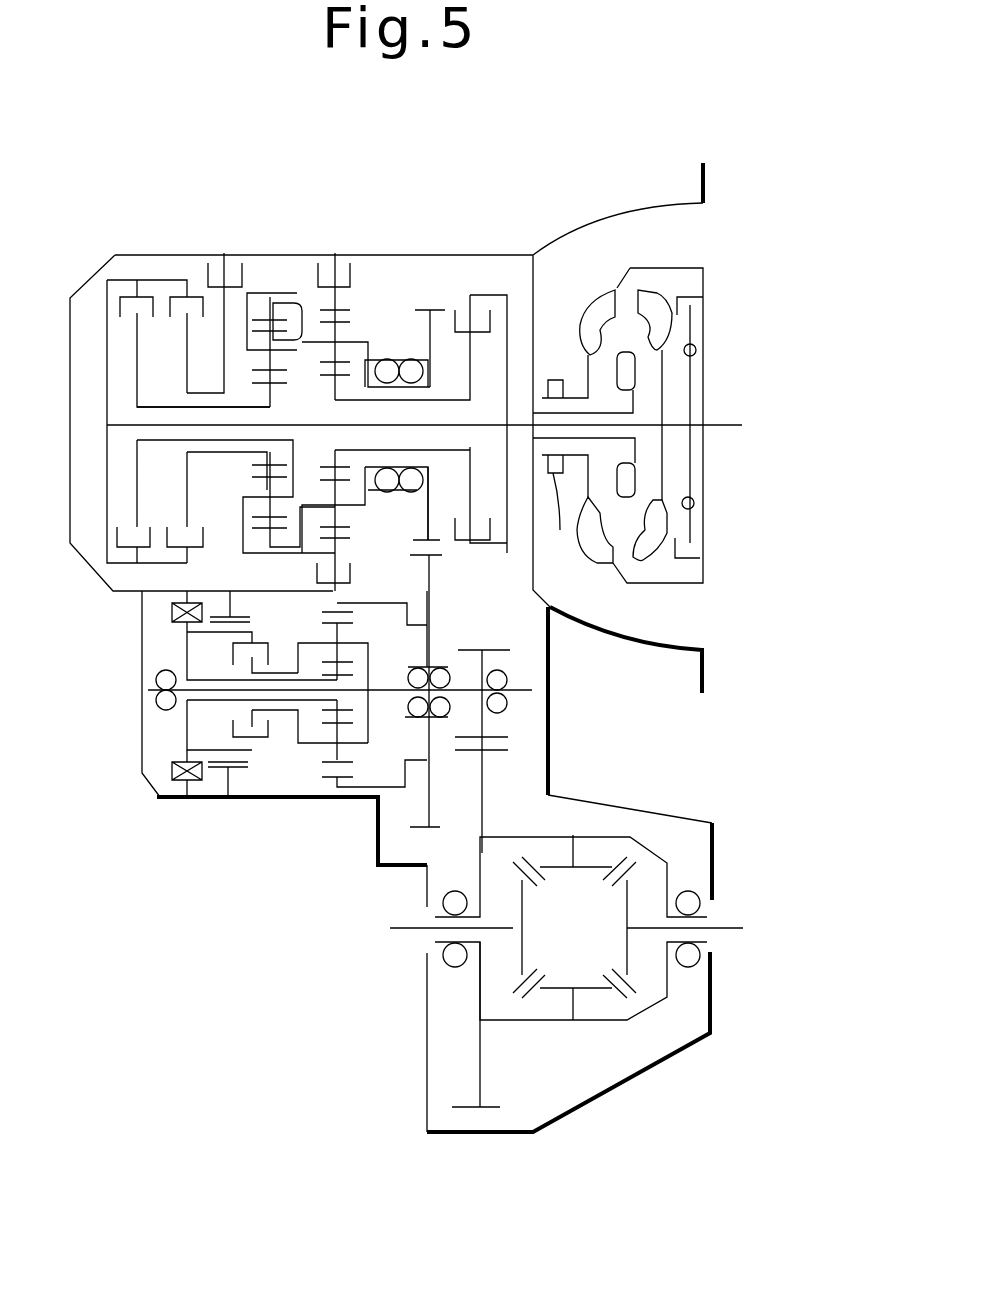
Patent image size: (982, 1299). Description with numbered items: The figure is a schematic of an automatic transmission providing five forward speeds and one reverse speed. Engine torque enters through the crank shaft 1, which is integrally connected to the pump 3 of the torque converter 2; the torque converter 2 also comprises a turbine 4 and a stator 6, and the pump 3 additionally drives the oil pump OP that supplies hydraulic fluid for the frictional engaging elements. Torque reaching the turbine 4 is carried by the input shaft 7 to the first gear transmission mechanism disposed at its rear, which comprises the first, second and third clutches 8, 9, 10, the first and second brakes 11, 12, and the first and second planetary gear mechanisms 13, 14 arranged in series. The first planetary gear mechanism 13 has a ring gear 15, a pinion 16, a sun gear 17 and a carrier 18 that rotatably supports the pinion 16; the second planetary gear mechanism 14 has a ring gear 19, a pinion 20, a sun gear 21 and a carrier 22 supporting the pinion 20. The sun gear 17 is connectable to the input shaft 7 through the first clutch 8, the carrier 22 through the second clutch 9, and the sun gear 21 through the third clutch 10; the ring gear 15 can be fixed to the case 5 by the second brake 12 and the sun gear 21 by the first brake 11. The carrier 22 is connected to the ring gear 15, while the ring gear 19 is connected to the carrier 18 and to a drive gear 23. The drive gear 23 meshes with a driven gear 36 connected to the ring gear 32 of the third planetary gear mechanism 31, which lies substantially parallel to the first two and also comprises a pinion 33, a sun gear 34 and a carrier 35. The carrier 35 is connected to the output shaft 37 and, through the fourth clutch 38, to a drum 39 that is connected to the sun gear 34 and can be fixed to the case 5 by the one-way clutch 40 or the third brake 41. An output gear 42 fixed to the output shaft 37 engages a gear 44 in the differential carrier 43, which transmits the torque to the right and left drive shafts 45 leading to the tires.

The crank shaft 1 is at (727, 425).
The torque converter 2 is at (688, 249).
The pump 3 is at (597, 317).
The turbine 4 is at (648, 310).
The case 5 is at (453, 253).
The stator 6 is at (627, 378).
The input shaft 7 is at (493, 422).
The first clutch 8 is at (460, 307).
The second clutch 9 is at (133, 297).
The third clutch 10 is at (180, 293).
The first brake 11 is at (223, 277).
The second brake 12 is at (327, 260).
The first planetary gear mechanism 13 is at (390, 296).
The second planetary gear mechanism 14 is at (236, 535).
The ring gear 15 is at (350, 312).
The pinion 16 is at (367, 320).
The sun gear 17 is at (333, 378).
The carrier 18 is at (398, 318).
The ring gear 19 is at (262, 317).
The pinion 20 is at (290, 340).
The sun gear 21 is at (273, 385).
The carrier 22 is at (308, 340).
The drive gear 23 is at (415, 542).
The third planetary gear mechanism 31 is at (322, 790).
The ring gear 32 is at (322, 765).
The pinion 33 is at (322, 612).
The sun gear 34 is at (343, 673).
The carrier 35 is at (368, 727).
The driven gear 36 is at (440, 557).
The output shaft 37 is at (525, 690).
The fourth clutch 38 is at (265, 737).
The drum 39 is at (203, 750).
The one-way clutch 40 is at (173, 772).
The third brake 41 is at (228, 767).
The output gear 42 is at (497, 648).
The differential carrier 43 is at (643, 843).
The gear 44 is at (500, 750).
The drive shafts 45 is at (408, 930).